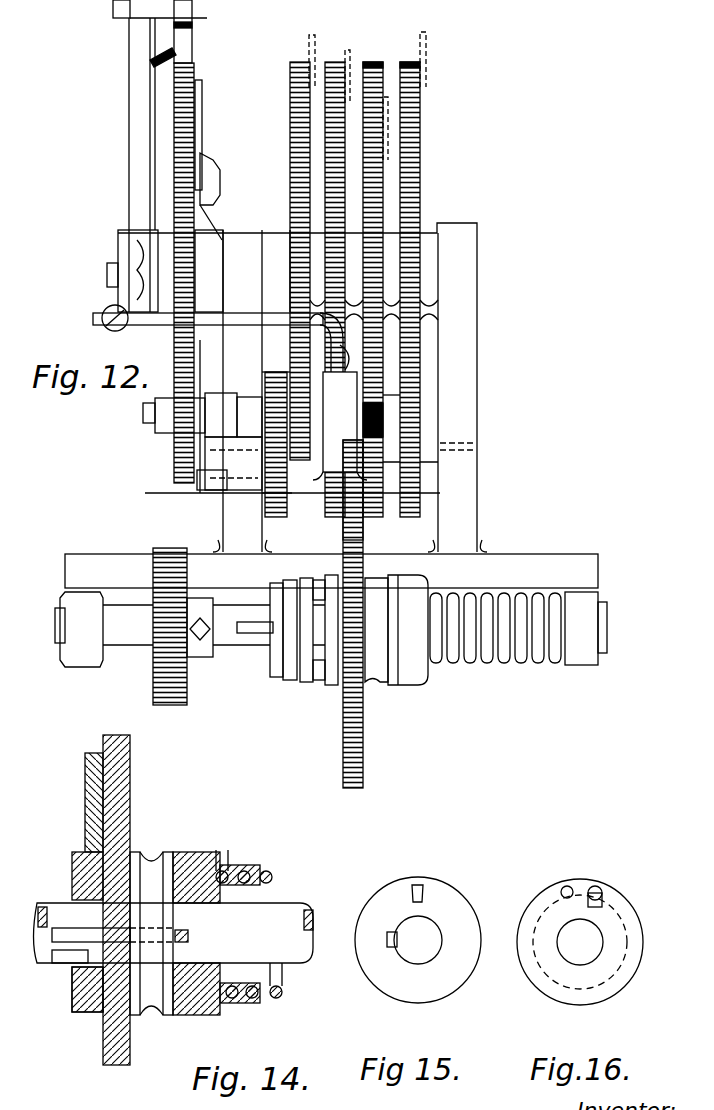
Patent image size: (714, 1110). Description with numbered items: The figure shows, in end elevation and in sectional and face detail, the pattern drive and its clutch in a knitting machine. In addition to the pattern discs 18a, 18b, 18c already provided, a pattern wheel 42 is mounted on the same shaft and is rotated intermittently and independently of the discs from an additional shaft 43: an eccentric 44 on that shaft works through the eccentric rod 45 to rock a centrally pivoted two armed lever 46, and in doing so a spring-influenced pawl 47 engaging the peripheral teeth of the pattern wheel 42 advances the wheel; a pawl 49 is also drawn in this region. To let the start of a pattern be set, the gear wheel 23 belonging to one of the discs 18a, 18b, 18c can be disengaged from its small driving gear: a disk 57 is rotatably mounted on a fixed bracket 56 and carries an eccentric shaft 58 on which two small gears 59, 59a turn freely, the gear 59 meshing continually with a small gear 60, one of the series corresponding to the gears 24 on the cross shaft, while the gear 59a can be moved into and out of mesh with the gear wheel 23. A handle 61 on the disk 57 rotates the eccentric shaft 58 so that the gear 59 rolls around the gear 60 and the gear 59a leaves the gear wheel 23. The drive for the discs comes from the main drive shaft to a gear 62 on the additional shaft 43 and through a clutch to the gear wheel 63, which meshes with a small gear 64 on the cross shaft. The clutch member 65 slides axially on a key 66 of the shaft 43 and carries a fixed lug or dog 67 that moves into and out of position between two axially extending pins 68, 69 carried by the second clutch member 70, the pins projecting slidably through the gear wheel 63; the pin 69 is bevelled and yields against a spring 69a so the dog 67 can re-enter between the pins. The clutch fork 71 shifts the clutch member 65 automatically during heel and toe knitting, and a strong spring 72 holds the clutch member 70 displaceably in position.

In FIG. 12, the pattern disc 18a is at (407, 62).
In FIG. 12, the pattern disc 18b is at (366, 62).
In FIG. 12, the pattern disc 18c is at (297, 62).
In FIG. 12, the gear wheel 23 is at (290, 210).
In FIG. 12, the gears 24 is at (383, 465).
In FIG. 12, the pattern wheel 42 is at (175, 113).
In FIG. 12, the additional shaft 43 is at (135, 630).
In FIG. 14, the additional shaft 43 is at (188, 920).
In FIG. 12, the eccentric 44 is at (342, 538).
In FIG. 14, the eccentric 44 is at (85, 788).
In FIG. 12, the eccentric rod 45 is at (230, 392).
In FIG. 12, the two armed lever 46 is at (138, 200).
In FIG. 12, the spring-influenced pawl 47 is at (190, 48).
In FIG. 12, the pawl 49 is at (207, 197).
In FIG. 12, the fixed bracket 56 is at (207, 482).
In FIG. 12, the disk 57 is at (232, 430).
In FIG. 12, the eccentric shaft 58 is at (145, 420).
In FIG. 12, the small gear 59 is at (258, 442).
In FIG. 12, the small gear 59a is at (293, 377).
In FIG. 12, the small gear 60 is at (275, 517).
In FIG. 12, the handle 61 is at (163, 403).
In FIG. 12, the gear 62 is at (187, 677).
In FIG. 12, the gear wheel 63 is at (363, 742).
In FIG. 14, the gear wheel 63 is at (130, 765).
In FIG. 12, the small gear 64 is at (385, 395).
In FIG. 12, the clutch member 65 is at (273, 667).
In FIG. 15, the clutch member 65 is at (377, 977).
In FIG. 12, the key 66 is at (250, 630).
In FIG. 15, the lug or dog 67 is at (418, 885).
In FIG. 12, the pin 68 is at (320, 580).
In FIG. 14, the pin 68 is at (70, 1000).
In FIG. 16, the pin 68 is at (596, 883).
In FIG. 14, the pin 69 is at (65, 933).
In FIG. 16, the pin 69 is at (568, 883).
In FIG. 14, the spring 69a is at (185, 920).
In FIG. 12, the second clutch member 70 is at (377, 590).
In FIG. 14, the second clutch member 70 is at (150, 860).
In FIG. 12, the clutch fork 71 is at (292, 677).
In FIG. 12, the strong spring 72 is at (478, 590).
In FIG. 14, the strong spring 72 is at (248, 868).